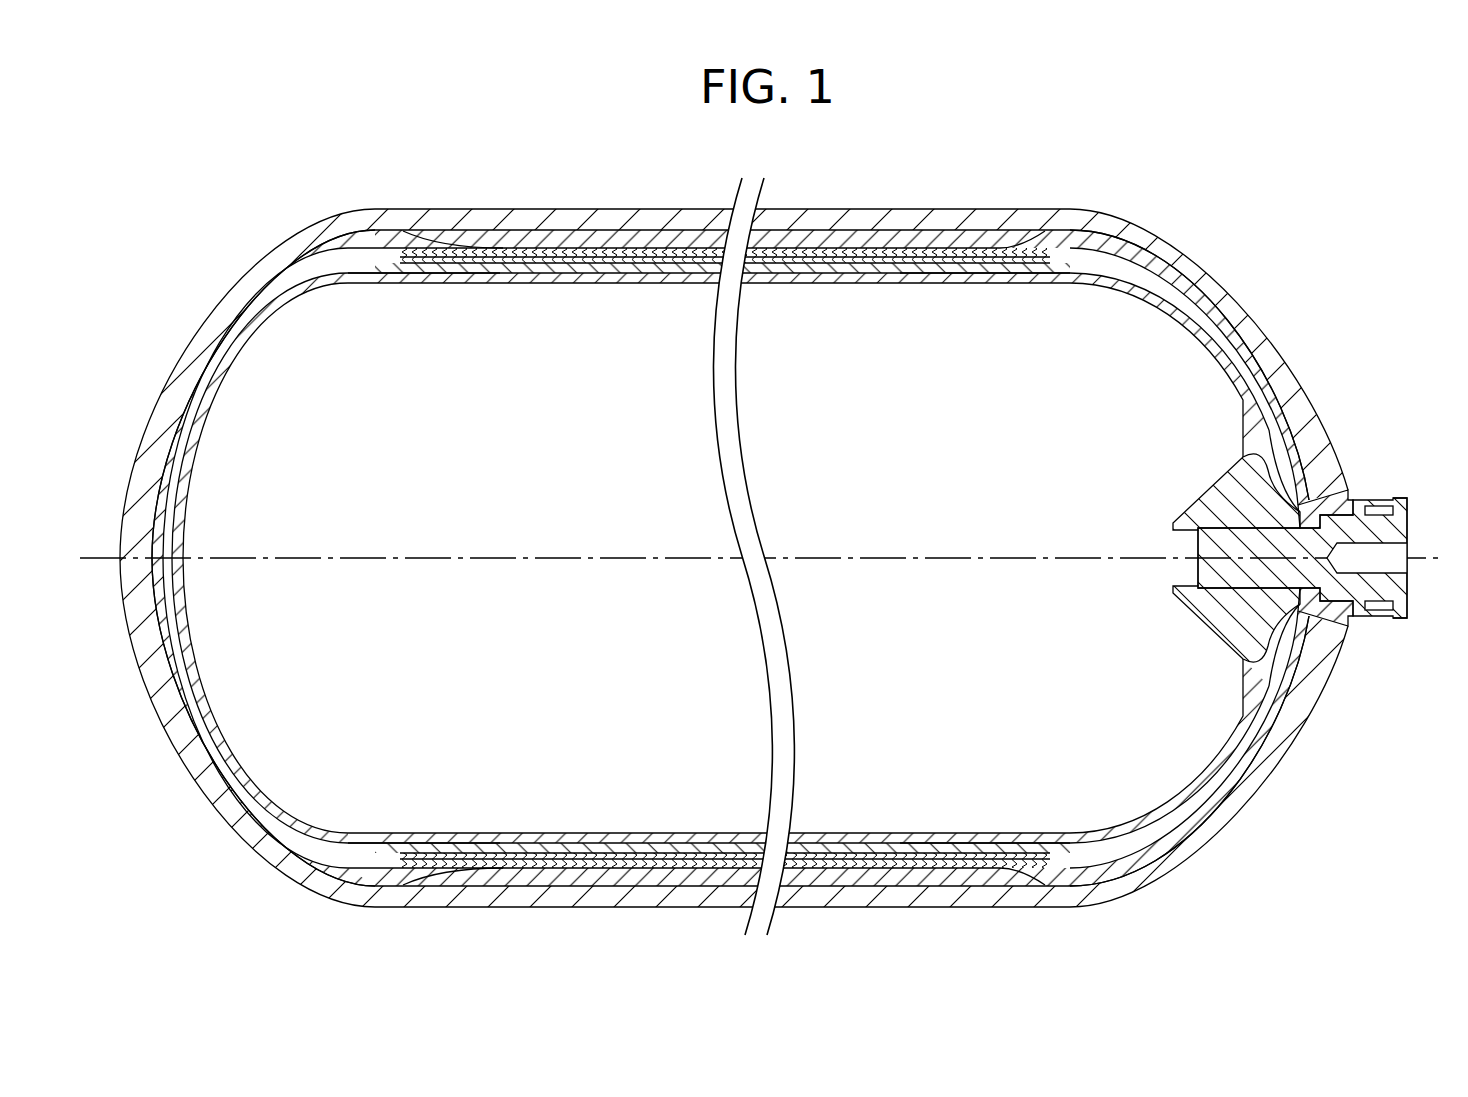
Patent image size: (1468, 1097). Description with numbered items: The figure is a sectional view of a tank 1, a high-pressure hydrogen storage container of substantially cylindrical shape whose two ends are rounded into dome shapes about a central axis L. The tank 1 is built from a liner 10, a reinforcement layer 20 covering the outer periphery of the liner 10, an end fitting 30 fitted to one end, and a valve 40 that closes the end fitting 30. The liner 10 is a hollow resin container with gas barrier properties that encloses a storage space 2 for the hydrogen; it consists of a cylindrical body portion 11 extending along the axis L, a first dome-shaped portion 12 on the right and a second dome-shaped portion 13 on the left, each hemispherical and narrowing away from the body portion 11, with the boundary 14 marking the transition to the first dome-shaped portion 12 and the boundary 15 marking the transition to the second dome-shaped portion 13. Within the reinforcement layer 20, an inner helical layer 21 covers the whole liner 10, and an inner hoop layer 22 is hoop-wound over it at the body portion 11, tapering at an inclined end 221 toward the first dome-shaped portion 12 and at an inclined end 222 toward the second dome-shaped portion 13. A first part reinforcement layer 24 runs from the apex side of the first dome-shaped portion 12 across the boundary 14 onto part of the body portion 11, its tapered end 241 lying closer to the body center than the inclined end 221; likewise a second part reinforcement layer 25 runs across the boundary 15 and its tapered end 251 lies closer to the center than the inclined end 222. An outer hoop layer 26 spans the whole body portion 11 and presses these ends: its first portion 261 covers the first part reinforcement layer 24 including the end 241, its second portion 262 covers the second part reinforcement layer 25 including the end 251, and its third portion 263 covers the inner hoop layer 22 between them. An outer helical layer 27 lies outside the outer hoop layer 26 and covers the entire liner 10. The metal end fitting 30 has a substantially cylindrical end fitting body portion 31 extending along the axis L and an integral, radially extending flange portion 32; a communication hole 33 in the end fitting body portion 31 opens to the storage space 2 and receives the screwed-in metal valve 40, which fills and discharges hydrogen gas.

The tank 1 is at (1193, 176).
The storage space 2 is at (672, 632).
The liner 10 is at (736, 558).
The body portion 11 is at (865, 277).
The first dome-shaped portion 12 is at (1185, 340).
The second dome-shaped portion 13 is at (225, 395).
The boundary 14 is at (1085, 285).
The boundary 15 is at (373, 285).
The reinforcement layer 20 is at (731, 507).
The inner helical layer 21 is at (637, 270).
The inner hoop layer 22 is at (730, 509).
The inclined end 221 is at (1058, 256).
The inclined end 222 is at (400, 240).
The first part reinforcement layer 24 is at (1104, 549).
The end 241 is at (957, 255).
The second part reinforcement layer 25 is at (326, 558).
The end 251 is at (500, 262).
The outer hoop layer 26 is at (730, 510).
The first portion 261 is at (1000, 240).
The second portion 262 is at (443, 238).
The third portion 263 is at (675, 245).
The outer helical layer 27 is at (920, 215).
The end fitting 30 is at (1275, 592).
The end fitting body portion 31 is at (1300, 620).
The flange portion 32 is at (1262, 642).
The communication hole 33 is at (1290, 580).
The valve 40 is at (1412, 506).
The axis L is at (1437, 553).